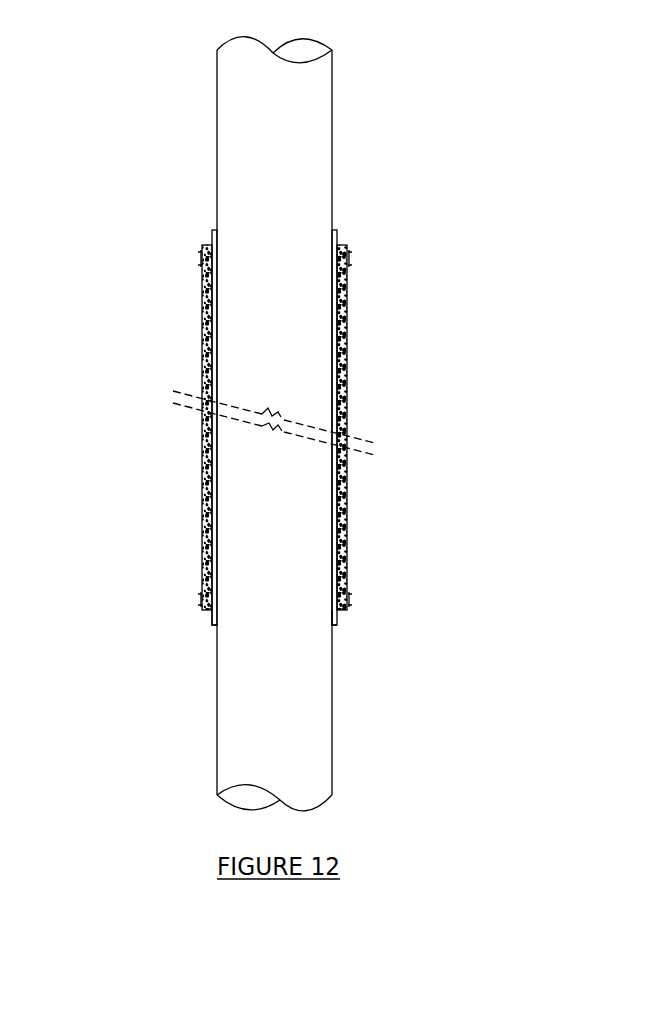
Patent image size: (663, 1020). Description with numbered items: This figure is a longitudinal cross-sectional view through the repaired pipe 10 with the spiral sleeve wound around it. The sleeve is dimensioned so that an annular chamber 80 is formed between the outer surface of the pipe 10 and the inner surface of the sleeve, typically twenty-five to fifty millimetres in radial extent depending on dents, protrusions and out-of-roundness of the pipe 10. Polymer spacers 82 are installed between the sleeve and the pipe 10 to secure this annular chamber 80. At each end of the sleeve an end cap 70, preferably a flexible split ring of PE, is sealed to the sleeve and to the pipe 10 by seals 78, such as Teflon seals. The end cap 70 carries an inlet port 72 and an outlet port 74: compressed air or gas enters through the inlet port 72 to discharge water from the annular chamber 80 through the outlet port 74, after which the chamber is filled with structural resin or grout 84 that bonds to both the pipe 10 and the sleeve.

The pipe 10 is at (292, 105).
The end cap 70 is at (350, 250).
The inlet port 72 is at (207, 615).
The outlet port 74 is at (346, 232).
The seals 78 is at (350, 597).
The annular chamber 80 is at (203, 453).
The polymer spacers 82 is at (276, 427).
The structural resin or grout 84 is at (348, 396).